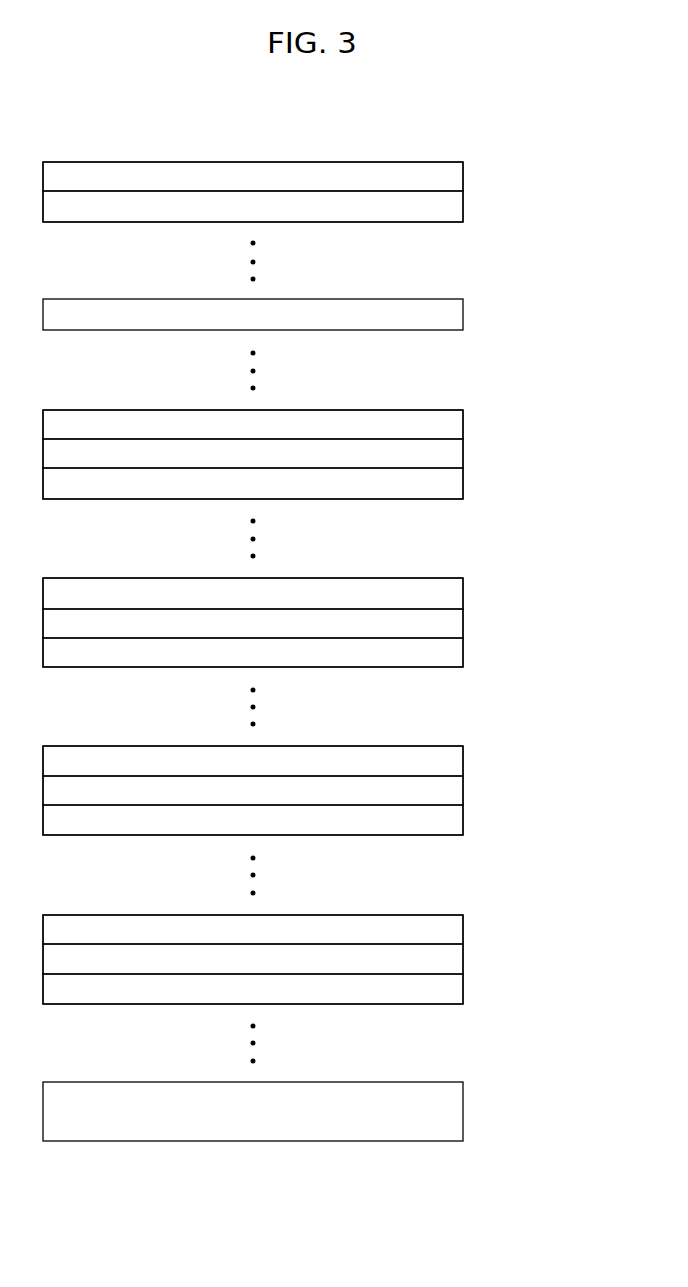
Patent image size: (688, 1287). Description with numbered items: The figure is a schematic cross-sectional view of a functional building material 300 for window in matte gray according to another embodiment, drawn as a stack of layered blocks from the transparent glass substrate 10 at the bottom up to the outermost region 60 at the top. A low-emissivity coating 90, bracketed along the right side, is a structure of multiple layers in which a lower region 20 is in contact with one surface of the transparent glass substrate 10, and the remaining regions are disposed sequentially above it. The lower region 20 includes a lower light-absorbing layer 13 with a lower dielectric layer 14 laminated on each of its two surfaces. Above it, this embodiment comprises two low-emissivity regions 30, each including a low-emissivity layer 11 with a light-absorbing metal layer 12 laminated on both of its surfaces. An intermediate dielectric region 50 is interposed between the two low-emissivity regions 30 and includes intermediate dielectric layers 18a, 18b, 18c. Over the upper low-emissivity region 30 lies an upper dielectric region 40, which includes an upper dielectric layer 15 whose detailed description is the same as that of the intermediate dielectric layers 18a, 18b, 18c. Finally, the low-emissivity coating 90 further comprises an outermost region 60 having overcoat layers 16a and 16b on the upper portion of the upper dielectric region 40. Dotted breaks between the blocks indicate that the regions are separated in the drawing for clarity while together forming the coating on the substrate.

The functional building material for window 300 is at (90, 142).
The transparent glass substrate 10 is at (493, 1082).
The lower region 20 is at (289, 960).
The low-emissivity region 30 is at (289, 623).
The upper dielectric region 40 is at (289, 316).
The intermediate dielectric region 50 is at (289, 623).
The outermost region 60 is at (289, 192).
The low-emissivity coating 90 is at (557, 200).
The low-emissivity layer 11 is at (253, 622).
The light-absorbing metal layer 12 is at (253, 623).
The lower light-absorbing layer 13 is at (253, 959).
The lower dielectric layer 14 is at (253, 960).
The upper dielectric layer 15 is at (253, 314).
The overcoat layer 16a is at (253, 206).
The overcoat layer 16b is at (253, 177).
The intermediate dielectric layer 18a is at (253, 593).
The intermediate dielectric layer 18b is at (253, 624).
The intermediate dielectric layer 18c is at (253, 653).